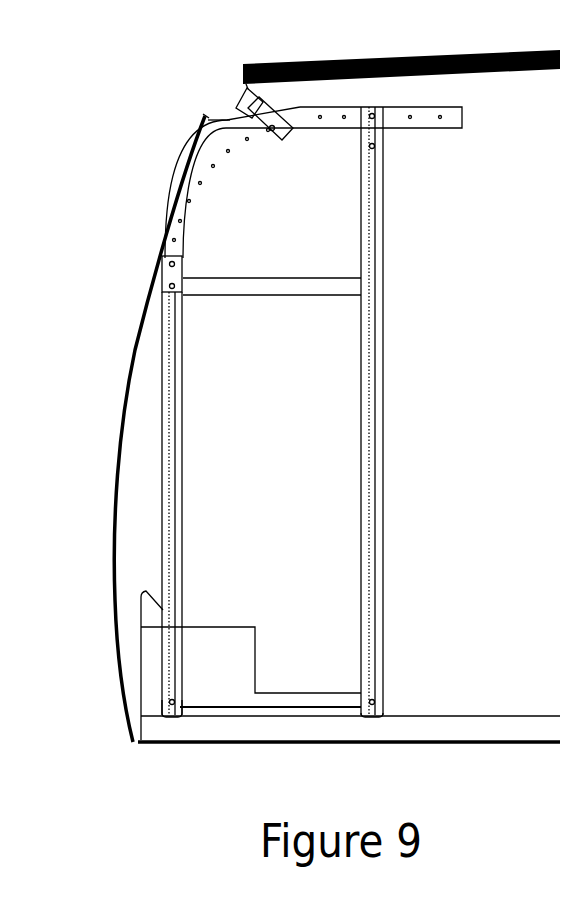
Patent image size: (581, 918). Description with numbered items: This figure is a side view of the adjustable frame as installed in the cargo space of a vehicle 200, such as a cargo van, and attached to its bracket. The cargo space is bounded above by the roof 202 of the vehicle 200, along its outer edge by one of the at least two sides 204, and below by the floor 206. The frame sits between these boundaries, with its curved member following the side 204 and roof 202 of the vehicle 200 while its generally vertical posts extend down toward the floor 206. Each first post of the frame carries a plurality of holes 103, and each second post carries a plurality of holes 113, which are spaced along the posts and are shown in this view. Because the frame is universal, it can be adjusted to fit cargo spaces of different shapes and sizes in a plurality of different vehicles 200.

The vehicle 200 is at (148, 135).
The roof 202 is at (382, 57).
The side 204 is at (143, 318).
The holes 103 is at (166, 448).
The holes 113 is at (370, 348).
The floor 206 is at (155, 733).